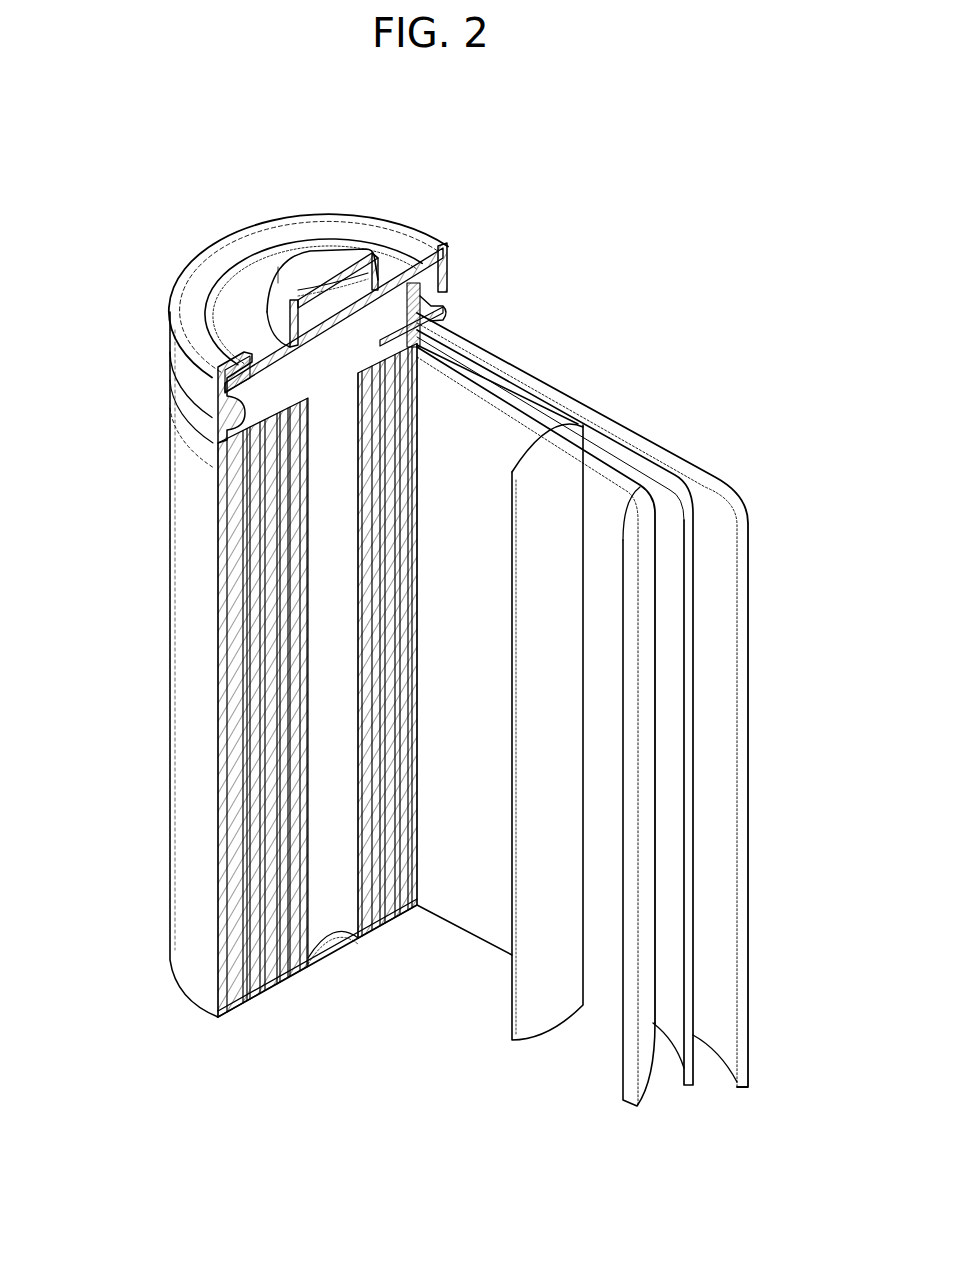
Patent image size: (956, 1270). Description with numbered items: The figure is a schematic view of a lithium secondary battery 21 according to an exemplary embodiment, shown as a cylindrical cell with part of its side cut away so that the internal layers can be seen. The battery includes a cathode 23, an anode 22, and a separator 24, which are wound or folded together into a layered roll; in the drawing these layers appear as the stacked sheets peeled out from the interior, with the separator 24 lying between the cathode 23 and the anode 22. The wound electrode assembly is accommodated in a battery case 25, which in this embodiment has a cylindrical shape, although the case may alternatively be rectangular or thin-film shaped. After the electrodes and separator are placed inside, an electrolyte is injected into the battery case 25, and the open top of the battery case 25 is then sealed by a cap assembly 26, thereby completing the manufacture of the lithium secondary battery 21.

The lithium secondary battery 21 is at (542, 248).
The anode 22 is at (733, 500).
The cathode 23 is at (608, 447).
The separator 24 is at (520, 388).
The battery case 25 is at (183, 662).
The cap assembly 26 is at (305, 262).